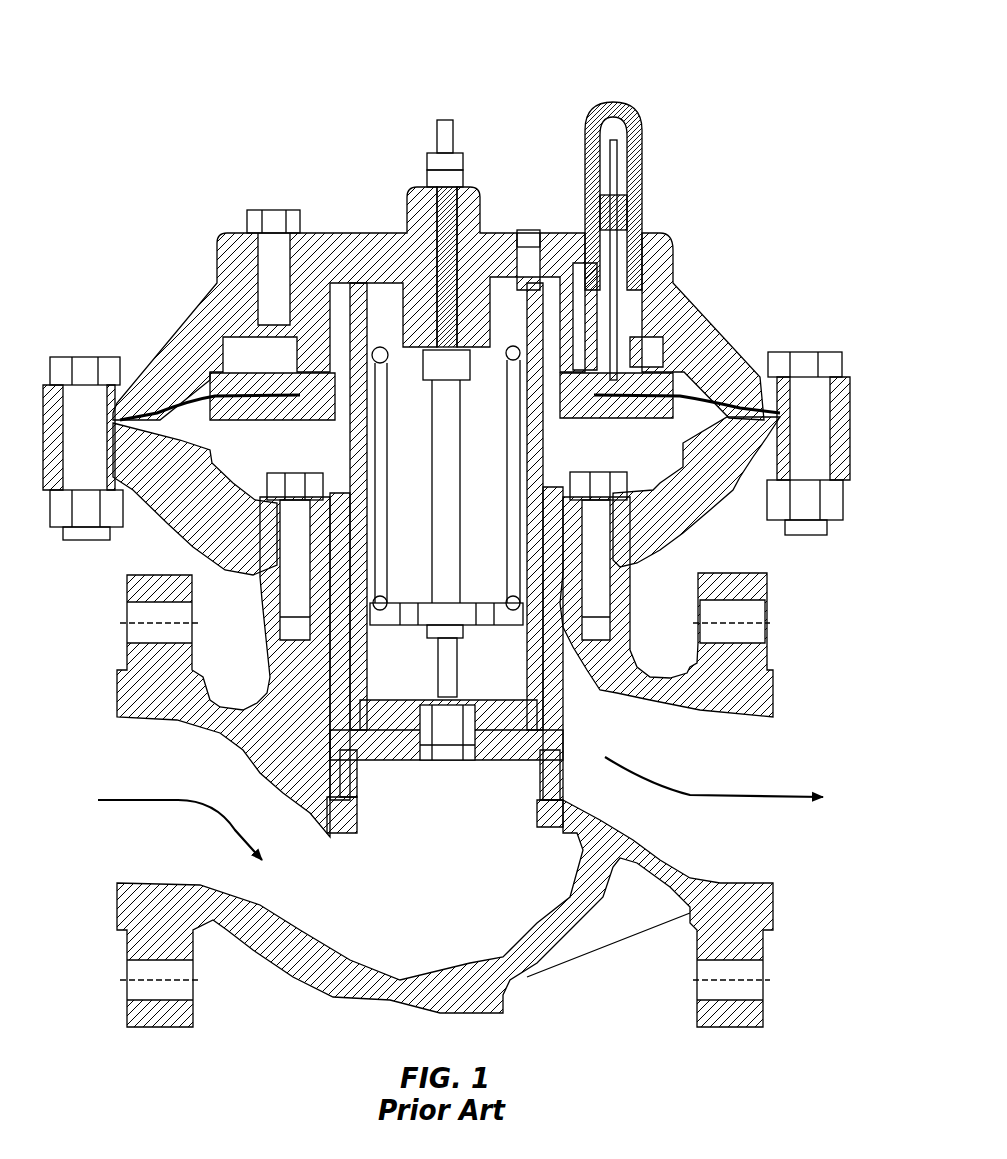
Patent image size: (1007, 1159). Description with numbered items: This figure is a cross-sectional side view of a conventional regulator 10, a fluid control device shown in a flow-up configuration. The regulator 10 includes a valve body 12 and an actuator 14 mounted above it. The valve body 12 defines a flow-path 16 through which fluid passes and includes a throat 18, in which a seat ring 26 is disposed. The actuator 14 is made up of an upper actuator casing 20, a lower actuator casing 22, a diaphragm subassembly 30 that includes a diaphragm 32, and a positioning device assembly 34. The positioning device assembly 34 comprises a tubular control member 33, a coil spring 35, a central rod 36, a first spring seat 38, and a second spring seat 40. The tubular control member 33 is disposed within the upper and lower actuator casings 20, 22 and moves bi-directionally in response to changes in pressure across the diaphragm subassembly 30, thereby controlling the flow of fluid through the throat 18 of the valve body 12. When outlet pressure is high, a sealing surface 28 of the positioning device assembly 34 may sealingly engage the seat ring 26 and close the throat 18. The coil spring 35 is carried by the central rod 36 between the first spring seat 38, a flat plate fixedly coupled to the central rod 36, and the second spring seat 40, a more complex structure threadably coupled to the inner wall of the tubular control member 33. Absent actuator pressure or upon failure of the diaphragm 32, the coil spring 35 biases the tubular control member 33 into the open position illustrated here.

The regulator 10 is at (527, 60).
The valve body 12 is at (115, 665).
The actuator 14 is at (148, 350).
The flow-path 16 is at (165, 800).
The throat 18 is at (350, 835).
The upper actuator casing 20 is at (690, 300).
The lower actuator casing 22 is at (733, 487).
The seat ring 26 is at (537, 807).
The sealing surface 28 is at (537, 757).
The diaphragm subassembly 30 is at (243, 355).
The diaphragm 32 is at (735, 340).
The tubular control member 33 is at (343, 443).
The positioning device assembly 34 is at (548, 450).
The coil spring 35 is at (510, 480).
The central rod 36 is at (448, 462).
The first spring seat 38 is at (423, 628).
The second spring seat 40 is at (418, 373).